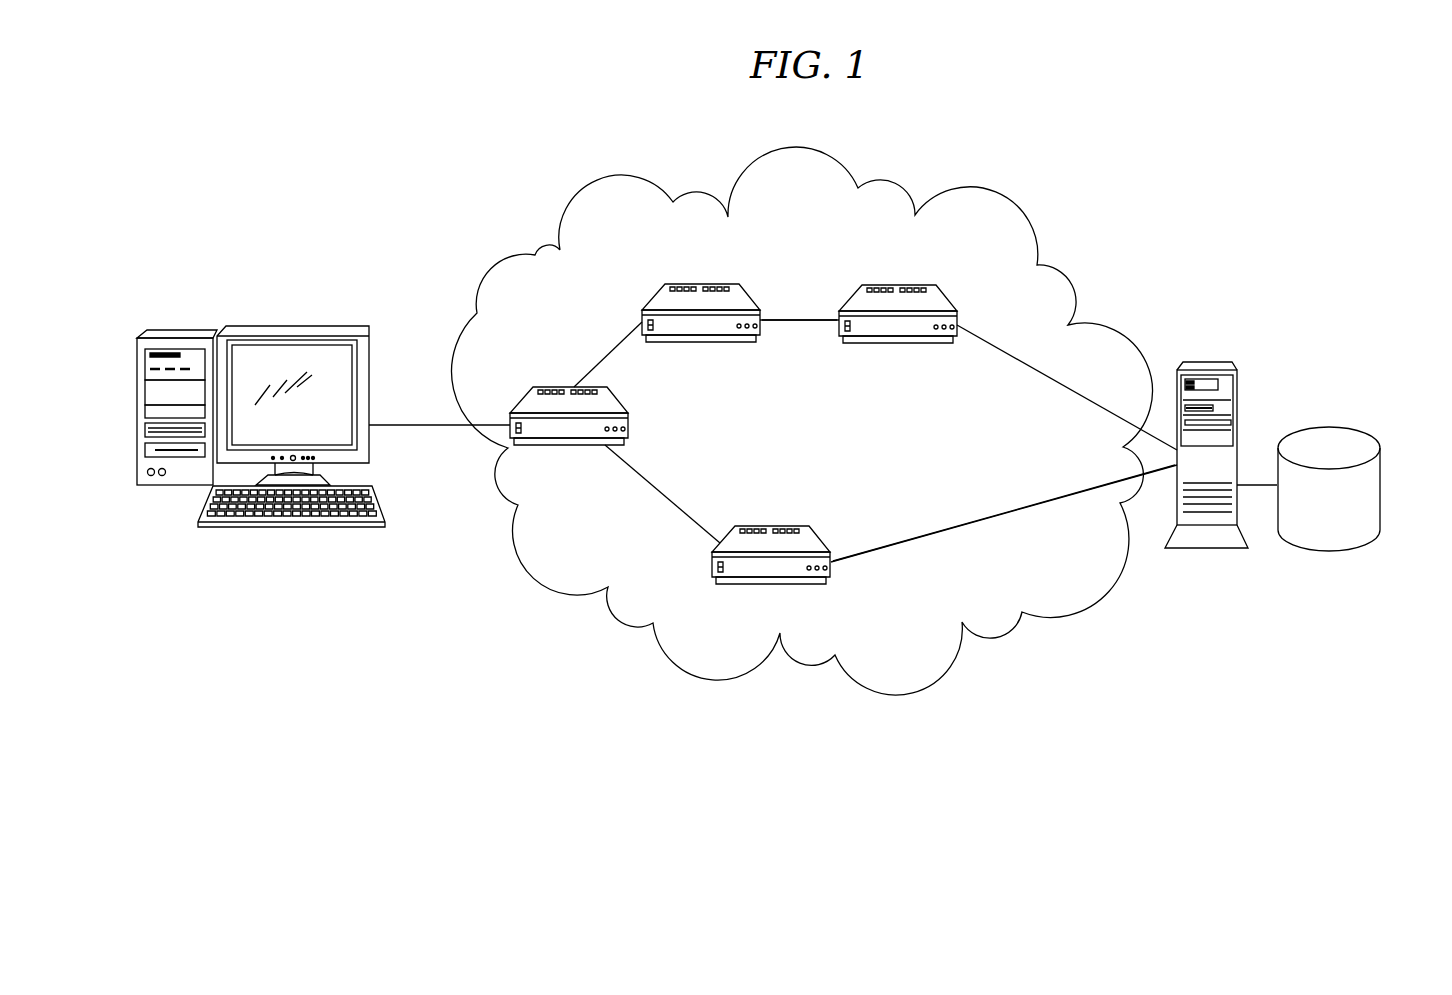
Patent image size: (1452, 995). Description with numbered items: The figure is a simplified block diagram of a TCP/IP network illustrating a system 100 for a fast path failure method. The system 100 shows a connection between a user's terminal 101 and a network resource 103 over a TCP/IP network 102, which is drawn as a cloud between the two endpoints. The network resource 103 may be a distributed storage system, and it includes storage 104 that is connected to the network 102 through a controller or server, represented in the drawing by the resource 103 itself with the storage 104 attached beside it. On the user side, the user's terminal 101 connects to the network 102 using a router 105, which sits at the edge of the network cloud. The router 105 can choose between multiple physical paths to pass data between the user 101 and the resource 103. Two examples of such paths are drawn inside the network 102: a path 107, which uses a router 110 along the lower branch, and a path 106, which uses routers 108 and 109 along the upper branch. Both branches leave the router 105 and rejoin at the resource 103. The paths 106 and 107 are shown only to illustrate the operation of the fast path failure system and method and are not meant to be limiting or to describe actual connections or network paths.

The system 100 is at (482, 620).
The user's terminal 101 is at (229, 314).
The TCP/IP network 102 is at (947, 670).
The network resource 103 is at (1198, 548).
The storage 104 is at (1337, 550).
The router 105 is at (630, 419).
The path 106 is at (806, 349).
The path 107 is at (881, 524).
The router 108 is at (707, 285).
The router 109 is at (897, 287).
The router 110 is at (712, 562).